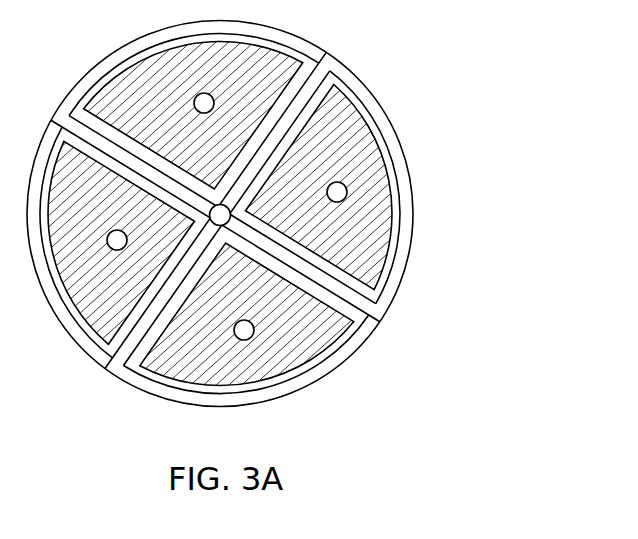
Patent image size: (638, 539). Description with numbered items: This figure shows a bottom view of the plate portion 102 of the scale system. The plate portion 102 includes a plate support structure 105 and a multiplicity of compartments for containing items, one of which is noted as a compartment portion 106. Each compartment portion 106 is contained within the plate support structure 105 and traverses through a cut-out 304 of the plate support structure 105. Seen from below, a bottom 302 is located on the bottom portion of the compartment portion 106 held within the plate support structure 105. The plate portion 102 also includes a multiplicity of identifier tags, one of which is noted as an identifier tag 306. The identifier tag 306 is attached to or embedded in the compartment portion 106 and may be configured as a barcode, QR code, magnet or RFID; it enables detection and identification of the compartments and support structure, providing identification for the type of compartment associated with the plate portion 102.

The plate portion 102 is at (410, 168).
The plate support structure 105 is at (340, 368).
The compartment portion 106 is at (353, 138).
The bottom 302 is at (352, 225).
The cut-out 304 is at (387, 290).
The identifier tag 306 is at (348, 195).